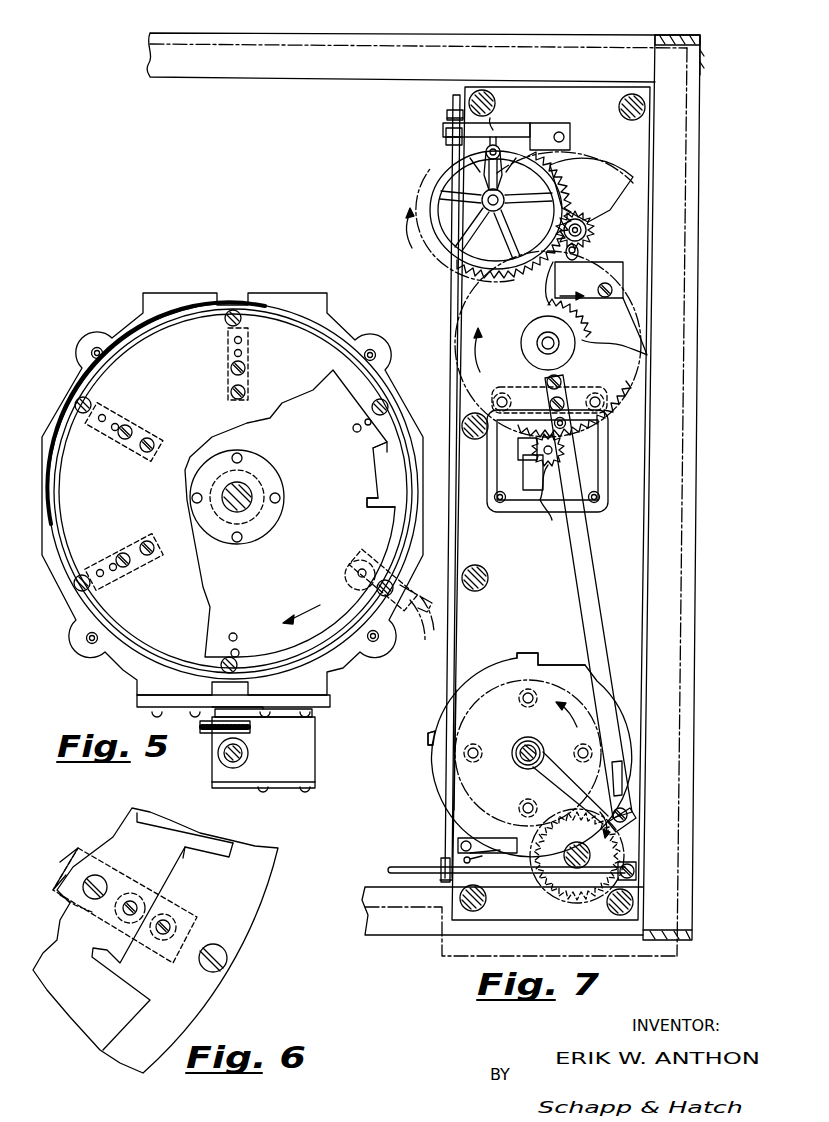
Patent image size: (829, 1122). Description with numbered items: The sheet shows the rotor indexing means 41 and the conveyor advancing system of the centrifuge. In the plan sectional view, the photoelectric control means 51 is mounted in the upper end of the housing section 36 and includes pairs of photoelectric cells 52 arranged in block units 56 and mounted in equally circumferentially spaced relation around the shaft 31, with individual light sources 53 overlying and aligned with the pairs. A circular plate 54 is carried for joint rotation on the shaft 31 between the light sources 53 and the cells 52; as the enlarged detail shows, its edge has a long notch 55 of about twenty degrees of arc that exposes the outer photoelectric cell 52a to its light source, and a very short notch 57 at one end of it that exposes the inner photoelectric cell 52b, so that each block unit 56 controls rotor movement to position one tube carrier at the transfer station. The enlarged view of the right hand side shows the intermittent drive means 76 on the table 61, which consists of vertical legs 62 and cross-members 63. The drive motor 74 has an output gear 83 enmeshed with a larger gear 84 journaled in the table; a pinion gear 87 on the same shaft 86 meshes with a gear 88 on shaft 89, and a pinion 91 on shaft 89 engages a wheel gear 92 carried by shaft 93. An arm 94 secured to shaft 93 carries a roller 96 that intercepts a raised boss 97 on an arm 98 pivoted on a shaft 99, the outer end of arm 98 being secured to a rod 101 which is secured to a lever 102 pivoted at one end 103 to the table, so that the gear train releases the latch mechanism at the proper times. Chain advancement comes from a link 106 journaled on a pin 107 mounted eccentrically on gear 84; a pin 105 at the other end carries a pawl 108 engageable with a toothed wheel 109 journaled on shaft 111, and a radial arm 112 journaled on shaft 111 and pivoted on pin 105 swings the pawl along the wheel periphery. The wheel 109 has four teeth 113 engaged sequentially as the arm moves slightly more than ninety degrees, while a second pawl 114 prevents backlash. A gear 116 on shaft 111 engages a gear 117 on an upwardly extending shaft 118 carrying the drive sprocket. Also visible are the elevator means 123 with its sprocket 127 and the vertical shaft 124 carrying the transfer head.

In FIG. 5, the shaft 31 is at (252, 488).
In FIG. 5, the housing section 36 is at (72, 368).
In FIG. 5, the rotor indexing means 41 is at (283, 290).
In FIG. 5, the photoelectric control means 51 is at (228, 372).
In FIG. 6, the photoelectric control means 51 is at (63, 899).
In FIG. 5, the photoelectric cells 52 is at (114, 430).
In FIG. 5, the outer photoelectric cell 52a is at (242, 340).
In FIG. 6, the outer photoelectric cell 52a is at (176, 925).
In FIG. 5, the inner photoelectric cell 52b is at (242, 353).
In FIG. 6, the inner photoelectric cell 52b is at (150, 890).
In FIG. 5, the light sources 53 is at (345, 577).
In FIG. 5, the circular plate 54 is at (314, 546).
In FIG. 6, the circular plate 54 is at (82, 1018).
In FIG. 5, the long notch 55 is at (387, 447).
In FIG. 6, the long notch 55 is at (198, 858).
In FIG. 5, the block units 56 is at (228, 349).
In FIG. 6, the block units 56 is at (82, 848).
In FIG. 5, the short notch 57 is at (368, 500).
In FIG. 6, the short notch 57 is at (102, 960).
In FIG. 7, the table 61 is at (622, 40).
In FIG. 7, the vertical legs 62 is at (702, 68).
In FIG. 7, the cross-members 63 is at (347, 42).
In FIG. 7, the drive motor 74 is at (525, 510).
In FIG. 7, the intermittent drive means 76 is at (699, 322).
In FIG. 7, the output gear 83 is at (556, 514).
In FIG. 7, the larger gear 84 is at (517, 326).
In FIG. 7, the shaft 86 is at (556, 346).
In FIG. 7, the pinion gear 87 is at (588, 316).
In FIG. 7, the gear 88 is at (596, 166).
In FIG. 7, the shaft 89 is at (582, 232).
In FIG. 7, the pinion 91 is at (578, 214).
In FIG. 7, the wheel gear 92 is at (455, 248).
In FIG. 7, the shaft 93 is at (505, 199).
In FIG. 7, the arm 94 is at (500, 172).
In FIG. 7, the roller 96 is at (510, 132).
In FIG. 7, the raised boss 97 is at (490, 118).
In FIG. 7, the arm 98 is at (536, 122).
In FIG. 7, the shaft 99 is at (561, 133).
In FIG. 7, the rod 101 is at (452, 286).
In FIG. 7, the lever 102 is at (421, 866).
In FIG. 7, the pivoted end 103 is at (637, 871).
In FIG. 7, the pin 105 is at (630, 810).
In FIG. 7, the link 106 is at (582, 575).
In FIG. 7, the pin 107 is at (552, 400).
In FIG. 7, the pawl 108 is at (624, 770).
In FIG. 7, the toothed wheel 109 is at (514, 660).
In FIG. 7, the shaft 111 is at (531, 744).
In FIG. 7, the radial arm 112 is at (547, 766).
In FIG. 7, the teeth 113 is at (546, 656).
In FIG. 7, the second pawl 114 is at (493, 840).
In FIG. 7, the gear 116 is at (446, 792).
In FIG. 7, the gear 117 is at (568, 898).
In FIG. 7, the upwardly extending shaft 118 is at (556, 866).
In FIG. 5, the elevator means 123 is at (315, 720).
In FIG. 5, the vertical shaft 124 is at (249, 755).
In FIG. 5, the sprocket 127 is at (250, 727).